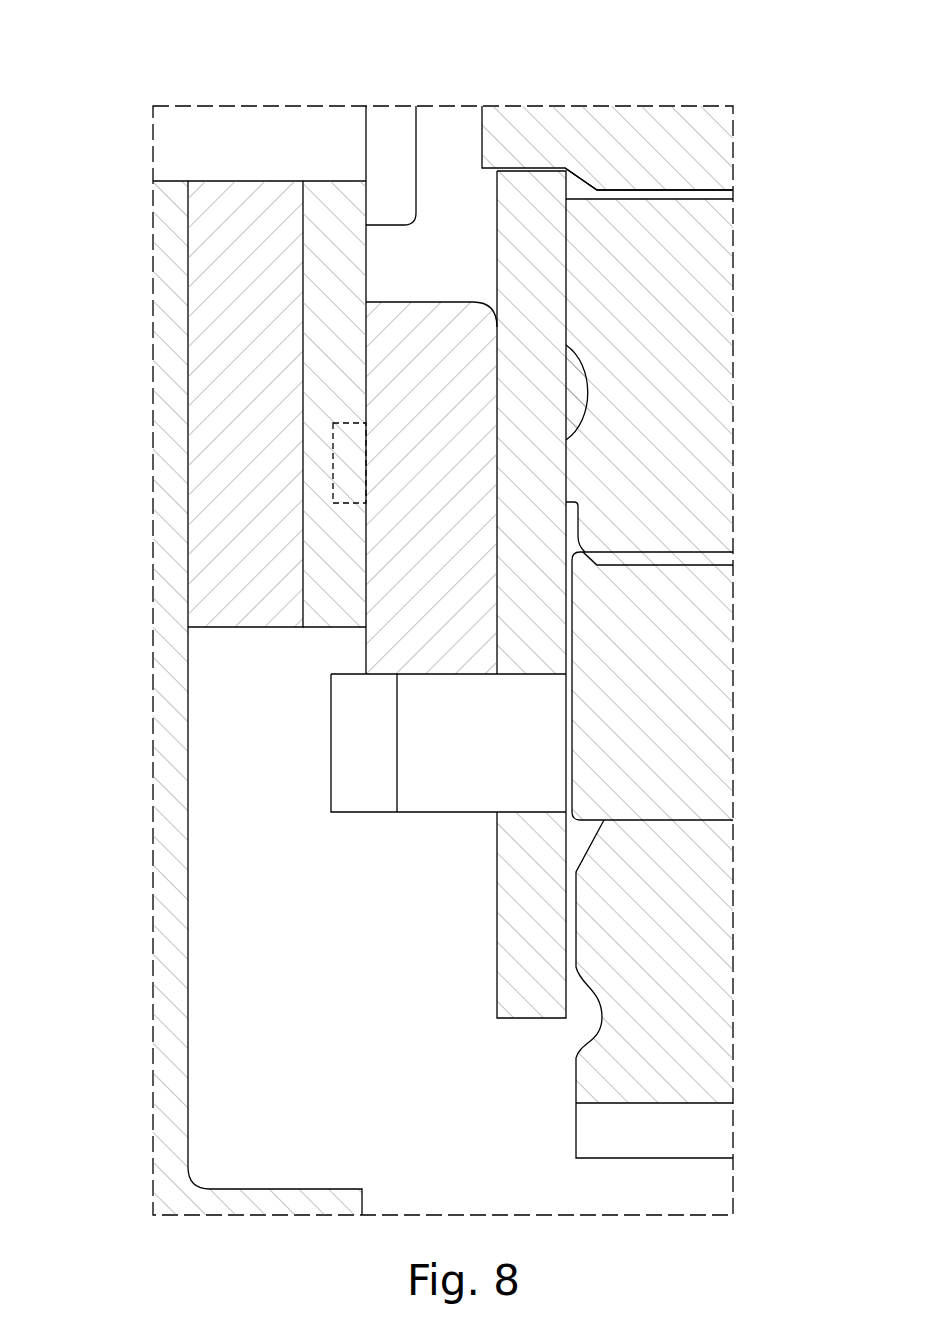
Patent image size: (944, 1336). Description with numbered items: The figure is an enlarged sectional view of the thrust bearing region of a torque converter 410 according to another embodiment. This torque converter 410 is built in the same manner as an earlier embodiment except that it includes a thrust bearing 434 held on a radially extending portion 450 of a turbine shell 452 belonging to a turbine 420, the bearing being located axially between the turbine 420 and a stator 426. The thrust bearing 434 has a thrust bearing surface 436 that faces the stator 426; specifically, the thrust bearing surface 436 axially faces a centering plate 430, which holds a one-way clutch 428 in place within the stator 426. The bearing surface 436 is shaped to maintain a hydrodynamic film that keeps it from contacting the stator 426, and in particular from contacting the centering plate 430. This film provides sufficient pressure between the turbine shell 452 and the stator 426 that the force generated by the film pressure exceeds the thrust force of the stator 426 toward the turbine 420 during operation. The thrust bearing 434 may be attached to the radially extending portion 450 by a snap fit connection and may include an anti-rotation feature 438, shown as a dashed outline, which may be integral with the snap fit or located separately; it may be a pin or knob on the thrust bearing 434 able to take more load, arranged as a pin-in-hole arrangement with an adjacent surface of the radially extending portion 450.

The torque converter 410 is at (722, 83).
The turbine 420 is at (299, 339).
The stator 426 is at (582, 93).
The one-way clutch 428 is at (653, 185).
The centering plate 430 is at (530, 343).
The thrust bearing 434 is at (473, 458).
The thrust bearing surface 436 is at (498, 487).
The anti-rotation feature 438 is at (352, 462).
The radially extending portion 450 is at (320, 378).
The turbine shell 452 is at (332, 197).